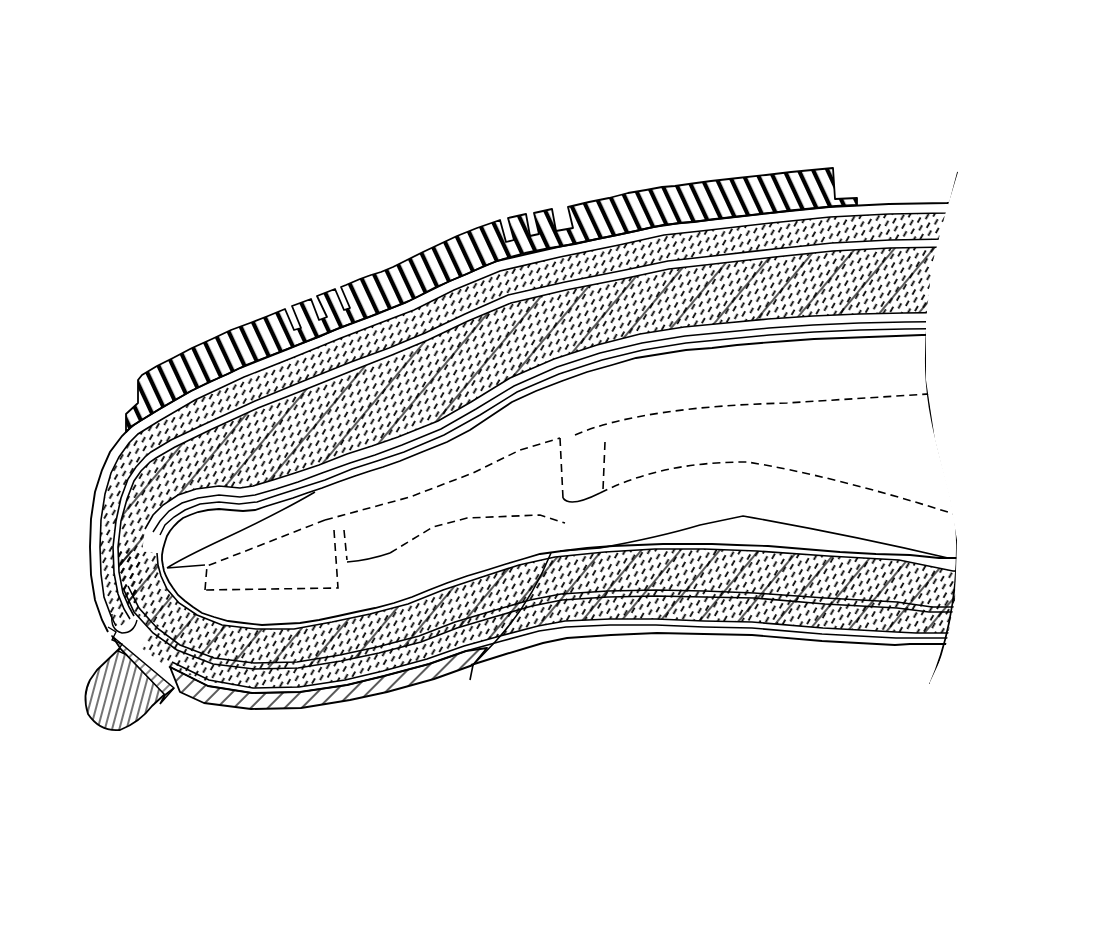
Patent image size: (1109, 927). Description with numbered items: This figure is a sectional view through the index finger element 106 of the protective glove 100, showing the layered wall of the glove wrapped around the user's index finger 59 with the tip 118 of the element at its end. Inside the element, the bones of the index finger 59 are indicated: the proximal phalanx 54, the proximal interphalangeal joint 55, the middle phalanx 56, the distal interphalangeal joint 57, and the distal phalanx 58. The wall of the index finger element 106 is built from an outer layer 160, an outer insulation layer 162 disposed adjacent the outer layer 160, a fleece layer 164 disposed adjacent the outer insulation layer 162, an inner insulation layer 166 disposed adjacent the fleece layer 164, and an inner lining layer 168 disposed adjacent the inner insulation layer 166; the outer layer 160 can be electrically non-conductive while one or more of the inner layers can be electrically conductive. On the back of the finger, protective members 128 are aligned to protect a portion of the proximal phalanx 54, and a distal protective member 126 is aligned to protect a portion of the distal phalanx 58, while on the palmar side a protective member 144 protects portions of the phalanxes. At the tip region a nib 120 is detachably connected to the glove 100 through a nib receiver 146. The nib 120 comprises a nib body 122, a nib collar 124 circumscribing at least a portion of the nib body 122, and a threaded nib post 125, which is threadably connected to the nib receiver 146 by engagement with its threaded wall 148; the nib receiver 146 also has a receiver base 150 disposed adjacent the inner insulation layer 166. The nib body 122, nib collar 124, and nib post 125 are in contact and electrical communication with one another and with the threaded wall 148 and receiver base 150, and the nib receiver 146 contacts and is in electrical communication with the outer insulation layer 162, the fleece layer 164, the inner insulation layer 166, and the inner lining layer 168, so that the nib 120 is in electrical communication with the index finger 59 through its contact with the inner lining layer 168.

The protective glove 100 is at (318, 98).
The index finger element 106 is at (100, 386).
The tip 118 is at (97, 513).
The nib 120 is at (90, 740).
The nib body 122 is at (90, 697).
The nib collar 124 is at (172, 690).
The nib post 125 is at (155, 708).
The distal protective member 126 is at (186, 362).
The protective member 128 is at (692, 195).
The protective member 144 is at (340, 712).
The nib receiver 146 is at (107, 633).
The threaded wall 148 is at (176, 692).
The receiver base 150 is at (93, 584).
The outer layer 160 is at (723, 630).
The outer insulation layer 162 is at (651, 615).
The fleece layer 164 is at (557, 612).
The inner insulation layer 166 is at (588, 582).
The inner lining layer 168 is at (492, 657).
The proximal phalanx 54 is at (620, 450).
The proximal interphalangeal joint 55 is at (585, 498).
The middle phalanx 56 is at (478, 490).
The distal interphalangeal joint 57 is at (389, 557).
The distal phalanx 58 is at (325, 521).
The index finger 59 is at (882, 363).